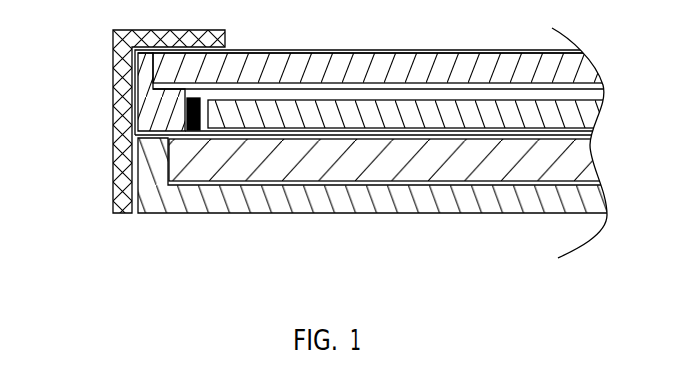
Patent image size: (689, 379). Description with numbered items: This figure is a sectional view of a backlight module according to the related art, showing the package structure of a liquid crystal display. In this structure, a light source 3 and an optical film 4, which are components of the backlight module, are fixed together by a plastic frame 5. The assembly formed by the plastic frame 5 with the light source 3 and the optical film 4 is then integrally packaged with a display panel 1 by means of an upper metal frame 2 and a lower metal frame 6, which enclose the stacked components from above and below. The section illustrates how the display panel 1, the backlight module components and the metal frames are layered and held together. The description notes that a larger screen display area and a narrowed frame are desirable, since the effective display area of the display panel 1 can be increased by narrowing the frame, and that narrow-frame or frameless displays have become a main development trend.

The display panel 1 is at (187, 64).
The upper metal frame 2 is at (126, 79).
The light source 3 is at (187, 111).
The optical film 4 is at (275, 112).
The plastic frame 5 is at (215, 154).
The lower metal frame 6 is at (160, 203).